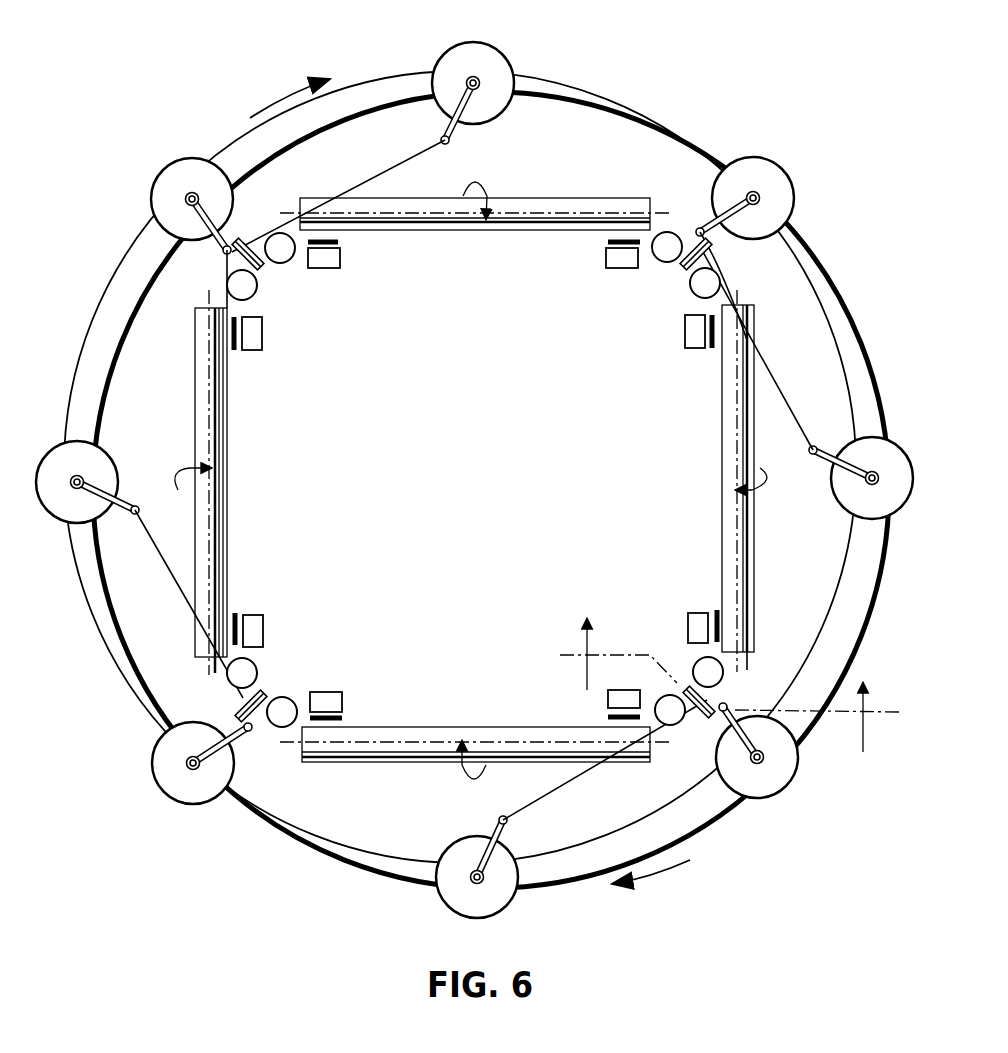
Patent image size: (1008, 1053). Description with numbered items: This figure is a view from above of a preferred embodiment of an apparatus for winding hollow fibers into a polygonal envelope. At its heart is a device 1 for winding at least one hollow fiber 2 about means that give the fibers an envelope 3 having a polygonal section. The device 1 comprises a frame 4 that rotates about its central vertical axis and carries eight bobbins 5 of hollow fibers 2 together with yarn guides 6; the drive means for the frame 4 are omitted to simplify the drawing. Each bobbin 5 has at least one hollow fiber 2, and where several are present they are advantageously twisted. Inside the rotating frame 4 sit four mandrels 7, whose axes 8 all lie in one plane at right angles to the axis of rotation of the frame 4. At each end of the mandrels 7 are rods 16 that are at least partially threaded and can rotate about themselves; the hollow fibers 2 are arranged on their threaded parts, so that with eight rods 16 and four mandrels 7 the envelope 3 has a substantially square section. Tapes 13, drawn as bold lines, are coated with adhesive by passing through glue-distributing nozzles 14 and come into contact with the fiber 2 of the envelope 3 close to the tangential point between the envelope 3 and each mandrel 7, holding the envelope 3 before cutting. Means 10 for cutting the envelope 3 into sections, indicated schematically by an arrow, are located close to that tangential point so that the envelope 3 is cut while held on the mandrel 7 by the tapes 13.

The device 1 is at (703, 122).
The hollow fiber 2 is at (405, 160).
The envelope 3 is at (655, 232).
The frame 4 is at (617, 100).
The bobbin 5 is at (475, 50).
The yarn guide 6 is at (450, 143).
The mandrel 7 is at (520, 200).
The axis 8 is at (543, 218).
The means for cutting 10 is at (248, 238).
The tape 13 is at (340, 240).
The glue-distributing nozzle 14 is at (320, 260).
The rod 16 is at (688, 284).